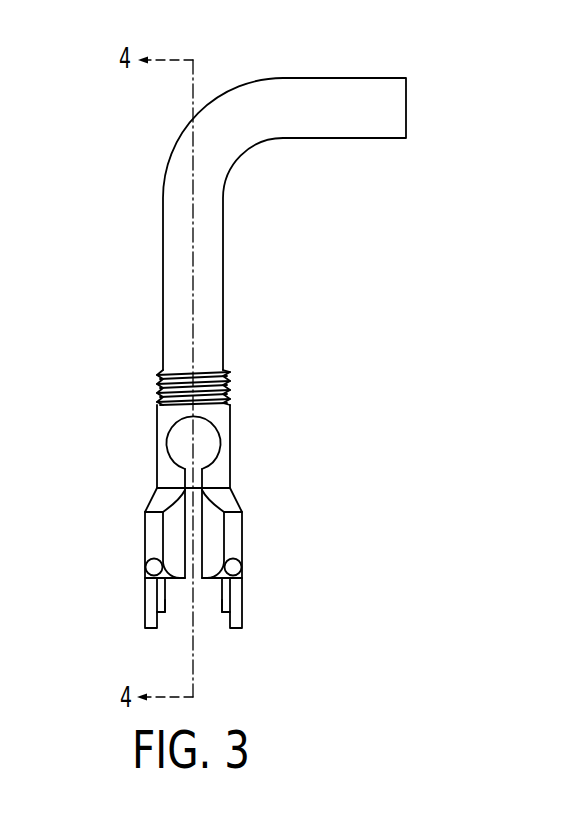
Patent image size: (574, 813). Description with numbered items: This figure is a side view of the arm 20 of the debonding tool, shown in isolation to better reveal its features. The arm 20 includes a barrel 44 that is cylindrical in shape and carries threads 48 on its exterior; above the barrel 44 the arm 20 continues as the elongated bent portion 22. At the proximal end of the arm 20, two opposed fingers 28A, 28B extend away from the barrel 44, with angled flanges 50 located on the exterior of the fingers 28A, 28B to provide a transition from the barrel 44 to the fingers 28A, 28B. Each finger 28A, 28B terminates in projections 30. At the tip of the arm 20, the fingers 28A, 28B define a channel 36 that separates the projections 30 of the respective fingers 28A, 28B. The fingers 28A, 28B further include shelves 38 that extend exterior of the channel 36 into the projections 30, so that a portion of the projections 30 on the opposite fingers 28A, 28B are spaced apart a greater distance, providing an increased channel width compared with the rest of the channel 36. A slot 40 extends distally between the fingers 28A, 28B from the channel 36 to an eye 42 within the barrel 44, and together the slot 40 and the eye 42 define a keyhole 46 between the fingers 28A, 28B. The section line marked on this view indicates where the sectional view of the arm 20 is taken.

The arm 20 is at (120, 185).
The tube 22 is at (228, 97).
The threads 48 is at (228, 380).
The barrel 44 is at (222, 470).
The eye 42 is at (205, 443).
The keyhole 46 is at (210, 475).
The slot 40 is at (190, 514).
The angled flanges 50 is at (160, 487).
The finger 28A is at (152, 541).
The finger 28B is at (226, 538).
The projections 30 is at (147, 597).
The shelves 38 is at (167, 630).
The channel 36 is at (203, 637).